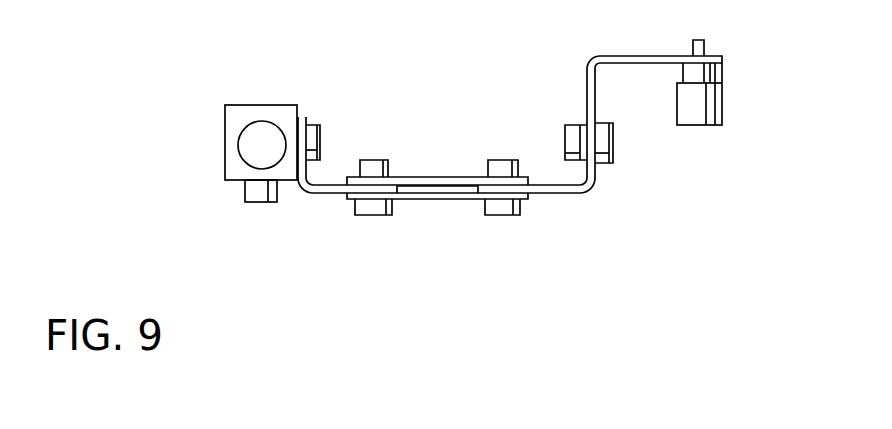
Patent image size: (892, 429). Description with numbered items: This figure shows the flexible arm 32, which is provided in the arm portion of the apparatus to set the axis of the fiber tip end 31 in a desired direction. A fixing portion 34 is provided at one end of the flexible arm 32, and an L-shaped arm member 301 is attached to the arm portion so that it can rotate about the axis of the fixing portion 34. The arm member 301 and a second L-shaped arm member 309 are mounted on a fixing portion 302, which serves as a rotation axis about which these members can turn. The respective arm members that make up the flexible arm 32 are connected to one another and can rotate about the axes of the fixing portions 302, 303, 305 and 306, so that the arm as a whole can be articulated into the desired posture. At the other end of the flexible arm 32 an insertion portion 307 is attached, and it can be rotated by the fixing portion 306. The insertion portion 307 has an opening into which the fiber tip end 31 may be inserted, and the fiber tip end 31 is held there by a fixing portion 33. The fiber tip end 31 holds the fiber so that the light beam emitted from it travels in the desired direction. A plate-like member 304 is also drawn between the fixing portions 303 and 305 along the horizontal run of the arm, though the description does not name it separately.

The flexible arm 32 is at (453, 305).
The L-shaped arm member 301 is at (635, 53).
The fixing portion 302 is at (612, 150).
The fixing portion 303 is at (500, 215).
The plate 304 is at (433, 195).
The fixing portion 305 is at (363, 208).
The fixing portion 306 is at (320, 132).
The insertion portion 307 is at (225, 148).
The L-shaped arm member 309 is at (568, 188).
The fiber tip end 31 is at (263, 132).
The fixing portion 33 is at (253, 200).
The fixing portion 34 is at (712, 110).